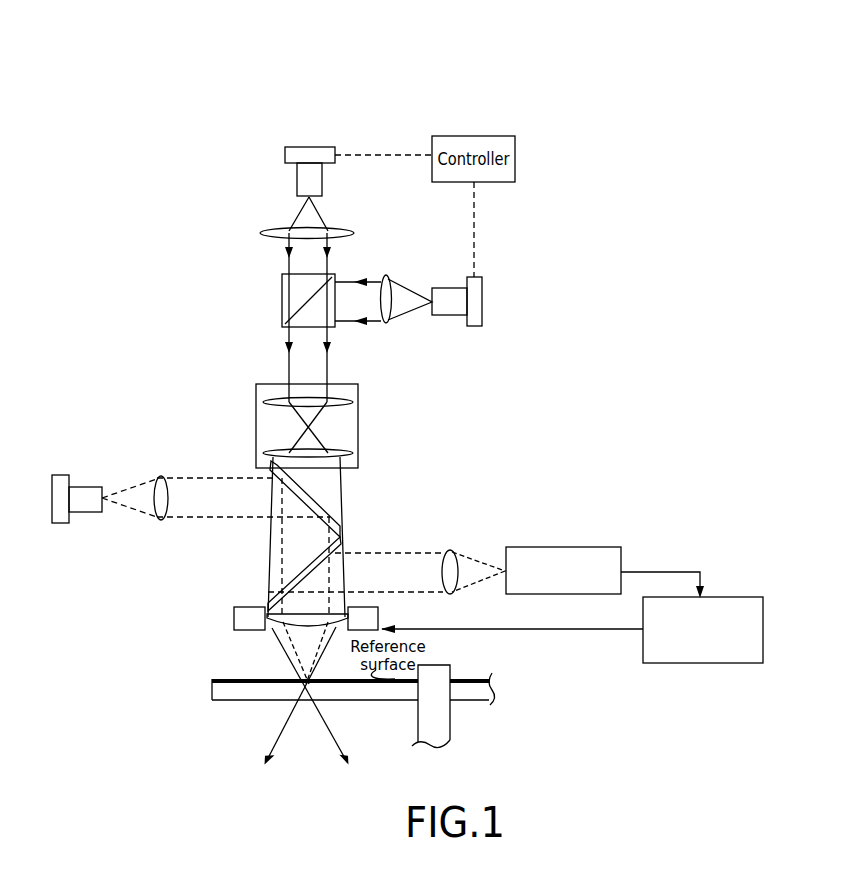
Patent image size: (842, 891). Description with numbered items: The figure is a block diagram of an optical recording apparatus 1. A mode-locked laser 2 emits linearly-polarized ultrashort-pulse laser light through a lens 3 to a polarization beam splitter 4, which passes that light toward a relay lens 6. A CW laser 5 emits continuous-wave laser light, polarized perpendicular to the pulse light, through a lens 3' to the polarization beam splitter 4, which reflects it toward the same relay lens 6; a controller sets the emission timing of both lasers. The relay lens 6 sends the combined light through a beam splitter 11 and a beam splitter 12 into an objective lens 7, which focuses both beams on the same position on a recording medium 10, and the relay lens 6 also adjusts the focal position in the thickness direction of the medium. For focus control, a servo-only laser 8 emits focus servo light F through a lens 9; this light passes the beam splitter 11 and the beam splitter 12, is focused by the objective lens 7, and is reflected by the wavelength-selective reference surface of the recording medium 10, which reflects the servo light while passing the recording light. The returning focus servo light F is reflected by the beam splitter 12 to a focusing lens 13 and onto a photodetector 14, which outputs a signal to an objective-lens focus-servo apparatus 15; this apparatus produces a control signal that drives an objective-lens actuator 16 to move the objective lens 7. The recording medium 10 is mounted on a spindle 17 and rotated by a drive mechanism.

The optical recording apparatus 1 is at (391, 62).
The mode-locked laser 2 is at (285, 153).
The lens 3 is at (327, 231).
The lens 3' is at (407, 328).
The polarization beam splitter 4 is at (282, 298).
The CW laser 5 is at (482, 301).
The relay lens 6 is at (358, 423).
The objective lens 7 is at (270, 629).
The servo-only laser 8 is at (58, 475).
The lens 9 is at (161, 476).
The focus servo light F is at (138, 513).
The recording medium 10 is at (212, 690).
The beam splitter 11 is at (317, 503).
The beam splitter 12 is at (303, 564).
The focusing lens 13 is at (453, 548).
The photodetector for focus servo 14 is at (535, 547).
The objective-lens focus-servo apparatus 15 is at (708, 664).
The objective-lens actuator 16 is at (380, 611).
The spindle 17 is at (452, 722).